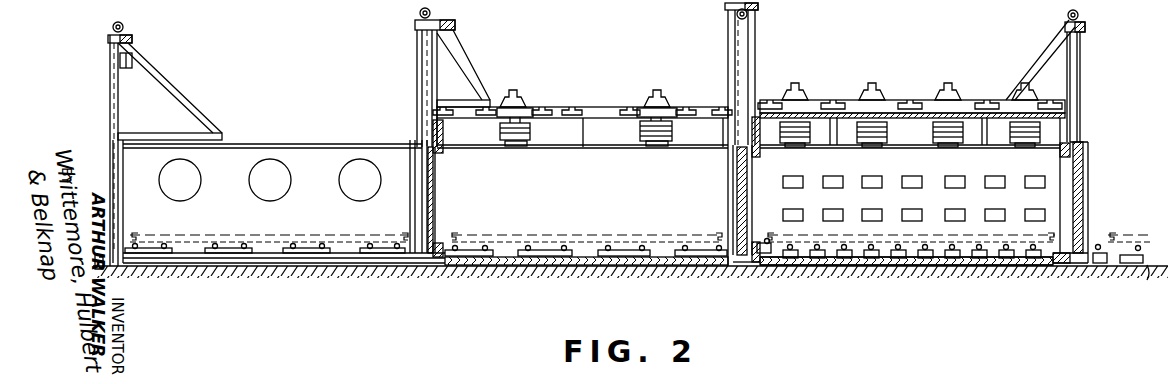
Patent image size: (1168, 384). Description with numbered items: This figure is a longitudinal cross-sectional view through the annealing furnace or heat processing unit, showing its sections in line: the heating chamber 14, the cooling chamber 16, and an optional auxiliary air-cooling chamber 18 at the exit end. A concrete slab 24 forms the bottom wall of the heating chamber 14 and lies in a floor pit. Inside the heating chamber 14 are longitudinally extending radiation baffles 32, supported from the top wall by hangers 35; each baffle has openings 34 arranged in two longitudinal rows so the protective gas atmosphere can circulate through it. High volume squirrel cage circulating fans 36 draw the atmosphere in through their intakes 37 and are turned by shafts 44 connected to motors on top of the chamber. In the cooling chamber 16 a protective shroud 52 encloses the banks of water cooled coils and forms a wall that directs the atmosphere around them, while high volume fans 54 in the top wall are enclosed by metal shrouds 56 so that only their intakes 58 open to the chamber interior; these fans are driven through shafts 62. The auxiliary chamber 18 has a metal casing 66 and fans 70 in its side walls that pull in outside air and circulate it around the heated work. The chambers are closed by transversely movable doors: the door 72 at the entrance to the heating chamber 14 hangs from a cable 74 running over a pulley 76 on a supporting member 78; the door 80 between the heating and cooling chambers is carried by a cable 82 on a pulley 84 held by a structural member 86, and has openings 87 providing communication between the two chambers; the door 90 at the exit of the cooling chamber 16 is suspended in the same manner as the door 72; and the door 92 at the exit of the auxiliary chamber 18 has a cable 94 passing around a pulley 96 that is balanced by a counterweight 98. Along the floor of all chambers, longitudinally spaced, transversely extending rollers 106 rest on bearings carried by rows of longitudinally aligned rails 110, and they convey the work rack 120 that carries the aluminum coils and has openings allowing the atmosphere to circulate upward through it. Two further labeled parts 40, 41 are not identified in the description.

The heating chamber 14 is at (906, 191).
The cooling chamber 16 is at (582, 191).
The auxiliary air-cooling chamber 18 is at (266, 234).
The concrete slab 24 is at (978, 264).
The radiation baffles 32 is at (1035, 155).
The openings 34 is at (1037, 180).
The hangers 35 is at (832, 118).
The circulating fans 36 is at (803, 118).
The fan intakes 37 is at (790, 146).
The partition wall 40 is at (433, 173).
The top plate 41 is at (562, 117).
The fan shafts 44 is at (793, 97).
The protective shroud 52 is at (440, 137).
The high volume fans 54 is at (500, 134).
The metal shrouds 56 is at (604, 153).
The fan intakes 58 is at (511, 147).
The fan shafts 62 is at (513, 90).
The metal casing 66 is at (310, 144).
The fans 70 is at (165, 192).
The door 72 is at (1080, 202).
The cable 74 is at (1080, 77).
The pulley 76 is at (1080, 15).
The supporting member 78 is at (1042, 47).
The door 80 is at (740, 188).
The cable 82 is at (738, 48).
The pulley 84 is at (748, 15).
The structural member 86 is at (735, 15).
The openings 87 is at (740, 237).
The door 90 is at (418, 173).
The door 92 is at (113, 160).
The cable 94 is at (124, 27).
The pulley 96 is at (118, 27).
The counterweight 98 is at (128, 66).
The rollers 106 is at (203, 250).
The rails 110 is at (308, 254).
The work rack 120 is at (511, 238).